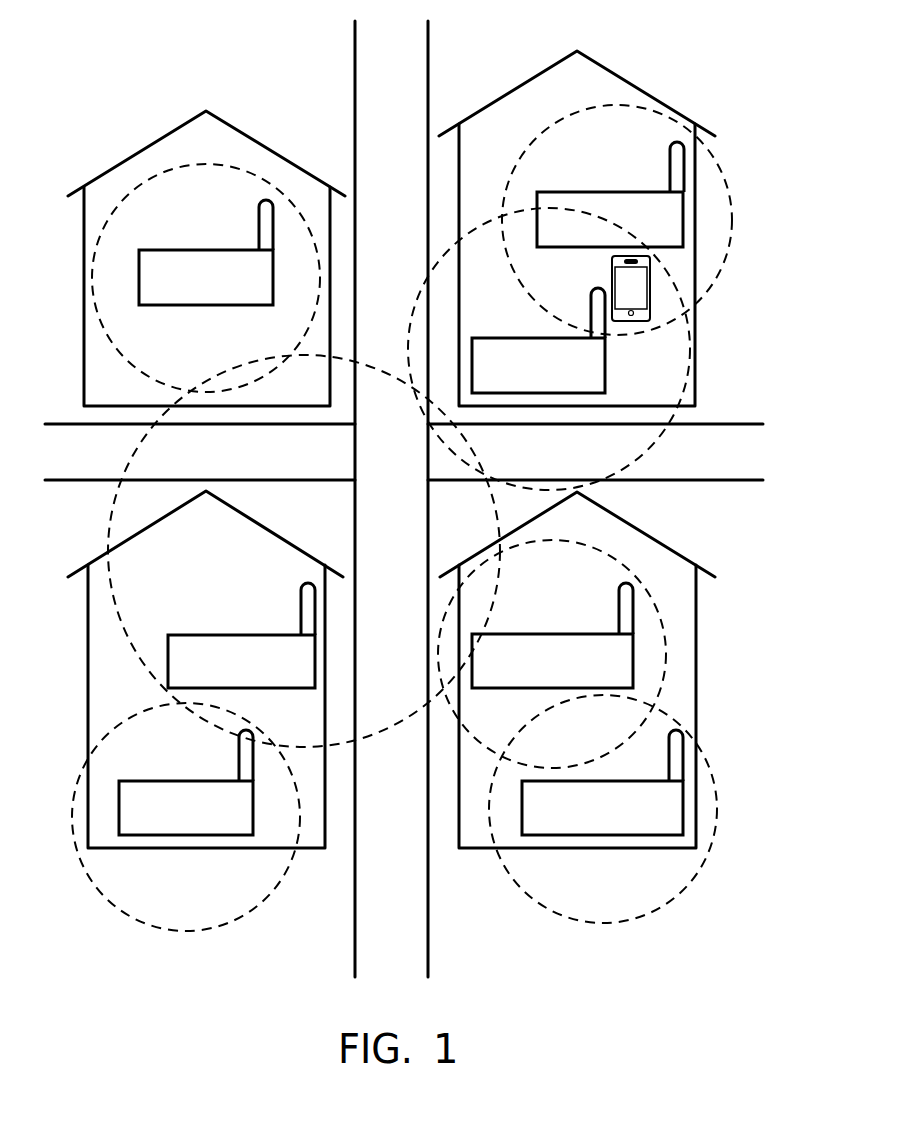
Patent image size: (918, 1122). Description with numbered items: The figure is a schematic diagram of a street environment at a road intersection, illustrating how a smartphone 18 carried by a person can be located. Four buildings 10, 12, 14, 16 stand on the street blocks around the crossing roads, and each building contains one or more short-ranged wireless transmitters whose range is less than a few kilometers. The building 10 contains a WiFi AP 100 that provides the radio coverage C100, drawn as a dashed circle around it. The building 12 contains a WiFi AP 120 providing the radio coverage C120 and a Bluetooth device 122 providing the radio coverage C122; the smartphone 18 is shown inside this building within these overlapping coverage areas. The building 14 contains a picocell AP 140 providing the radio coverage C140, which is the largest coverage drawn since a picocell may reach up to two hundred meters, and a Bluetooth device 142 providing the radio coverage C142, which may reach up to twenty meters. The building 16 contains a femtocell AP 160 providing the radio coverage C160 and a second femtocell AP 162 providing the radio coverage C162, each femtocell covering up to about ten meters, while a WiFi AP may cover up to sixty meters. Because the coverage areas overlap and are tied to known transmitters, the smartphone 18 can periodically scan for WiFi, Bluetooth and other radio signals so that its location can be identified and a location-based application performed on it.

The building 10 is at (274, 152).
The building 12 is at (510, 92).
The building 14 is at (274, 533).
The building 16 is at (686, 559).
The smartphone 18 is at (612, 267).
The WiFi AP 100 is at (140, 250).
The WiFi AP 120 is at (472, 338).
The Bluetooth device 122 is at (537, 192).
The picocell AP 140 is at (168, 635).
The Bluetooth device 142 is at (119, 781).
The femtocell AP 160 is at (537, 634).
The femtocell AP 162 is at (600, 781).
The radio coverage C100 is at (148, 178).
The radio coverage C120 is at (681, 398).
The radio coverage C122 is at (630, 105).
The radio coverage C140 is at (388, 728).
The radio coverage C142 is at (191, 930).
The radio coverage C160 is at (667, 651).
The radio coverage C162 is at (608, 922).